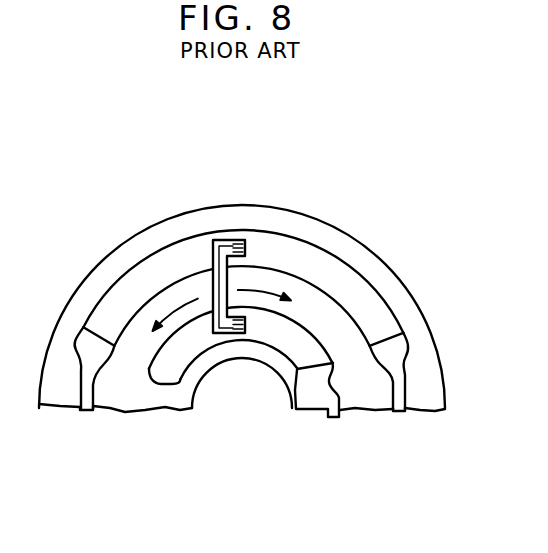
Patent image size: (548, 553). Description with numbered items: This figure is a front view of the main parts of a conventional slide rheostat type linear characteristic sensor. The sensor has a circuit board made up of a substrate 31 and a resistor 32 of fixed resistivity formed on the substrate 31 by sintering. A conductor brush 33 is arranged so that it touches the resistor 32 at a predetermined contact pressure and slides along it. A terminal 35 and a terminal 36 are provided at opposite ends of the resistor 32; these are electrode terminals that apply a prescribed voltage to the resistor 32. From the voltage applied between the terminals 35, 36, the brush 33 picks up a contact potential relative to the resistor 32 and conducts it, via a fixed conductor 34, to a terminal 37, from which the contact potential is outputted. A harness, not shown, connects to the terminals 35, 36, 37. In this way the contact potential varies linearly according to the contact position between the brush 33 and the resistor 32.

The substrate 31 is at (325, 305).
The resistor 32 is at (382, 310).
The conductor brush 33 is at (221, 246).
The fixed conductor 34 is at (297, 361).
The terminal 35 is at (407, 412).
The terminal 36 is at (82, 380).
The terminal 37 is at (337, 413).